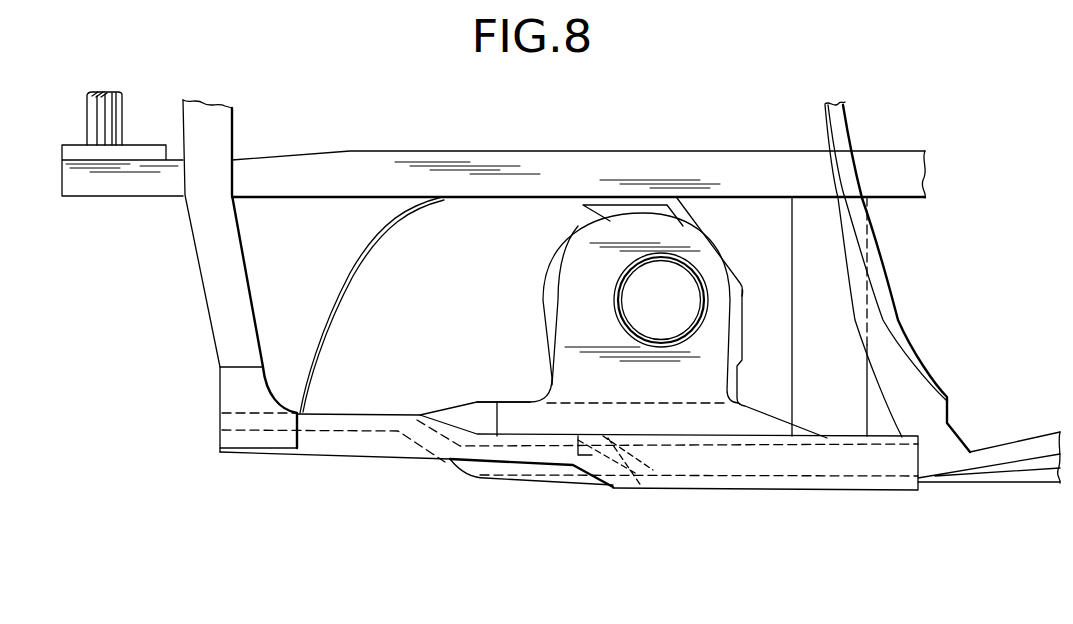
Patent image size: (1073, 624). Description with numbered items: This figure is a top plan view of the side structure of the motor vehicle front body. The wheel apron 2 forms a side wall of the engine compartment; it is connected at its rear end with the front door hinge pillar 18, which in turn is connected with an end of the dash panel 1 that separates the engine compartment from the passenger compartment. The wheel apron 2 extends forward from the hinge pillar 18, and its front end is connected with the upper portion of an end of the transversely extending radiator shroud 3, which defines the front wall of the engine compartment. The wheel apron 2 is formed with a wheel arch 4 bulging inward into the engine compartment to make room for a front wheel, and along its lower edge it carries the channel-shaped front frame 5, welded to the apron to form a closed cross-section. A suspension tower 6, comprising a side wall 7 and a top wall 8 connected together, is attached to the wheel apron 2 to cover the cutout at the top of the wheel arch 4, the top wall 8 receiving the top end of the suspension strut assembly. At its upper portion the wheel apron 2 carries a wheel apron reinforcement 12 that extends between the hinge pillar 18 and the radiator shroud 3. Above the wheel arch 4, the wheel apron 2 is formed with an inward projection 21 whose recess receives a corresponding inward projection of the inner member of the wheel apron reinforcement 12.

The dash panel 1 is at (880, 337).
The wheel apron 2 is at (380, 414).
The radiator shroud 3 is at (222, 323).
The wheel arch 4 is at (398, 223).
The front frame 5 is at (358, 150).
The suspension tower 6 is at (572, 288).
The side wall 7 is at (568, 241).
The top wall 8 is at (692, 238).
The wheel apron reinforcement 12 is at (539, 485).
The front door hinge pillar 18 is at (940, 470).
The inward projection 21 is at (487, 402).